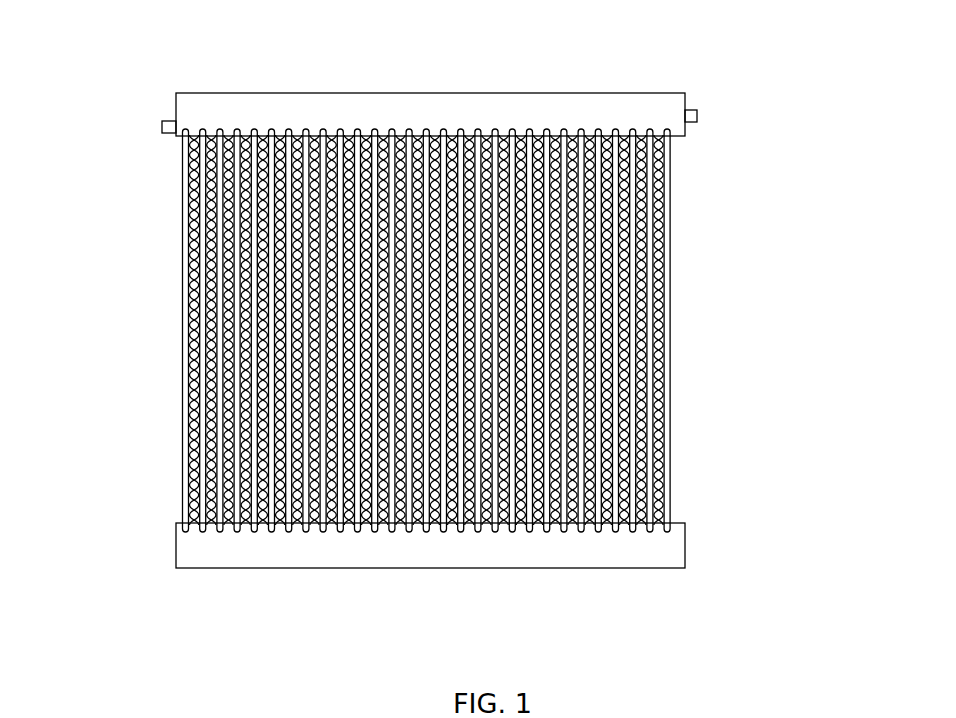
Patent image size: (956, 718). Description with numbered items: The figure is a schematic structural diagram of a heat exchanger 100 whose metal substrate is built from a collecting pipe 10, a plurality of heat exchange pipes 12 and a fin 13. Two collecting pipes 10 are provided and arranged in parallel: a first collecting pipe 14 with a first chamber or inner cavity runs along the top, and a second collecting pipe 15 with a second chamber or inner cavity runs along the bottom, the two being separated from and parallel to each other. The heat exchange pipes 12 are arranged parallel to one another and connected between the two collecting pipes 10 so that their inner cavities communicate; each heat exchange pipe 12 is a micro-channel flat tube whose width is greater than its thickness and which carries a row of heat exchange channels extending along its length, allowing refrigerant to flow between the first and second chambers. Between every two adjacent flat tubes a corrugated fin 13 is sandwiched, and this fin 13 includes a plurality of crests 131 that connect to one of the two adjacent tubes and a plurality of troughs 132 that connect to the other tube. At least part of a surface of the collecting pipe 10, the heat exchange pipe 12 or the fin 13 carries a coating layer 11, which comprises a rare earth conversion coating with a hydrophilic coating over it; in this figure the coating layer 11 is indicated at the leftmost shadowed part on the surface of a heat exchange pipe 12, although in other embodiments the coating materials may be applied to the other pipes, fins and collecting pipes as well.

The heat exchanger 100 is at (190, 43).
The collecting pipe 10 is at (663, 110).
The coating layer 11 is at (185, 173).
The heat exchange pipe 12 is at (670, 200).
The fin 13 is at (667, 333).
The crest 131 is at (630, 522).
The trough 132 is at (648, 417).
The first collecting pipe 14 is at (471, 107).
The second collecting pipe 15 is at (378, 555).